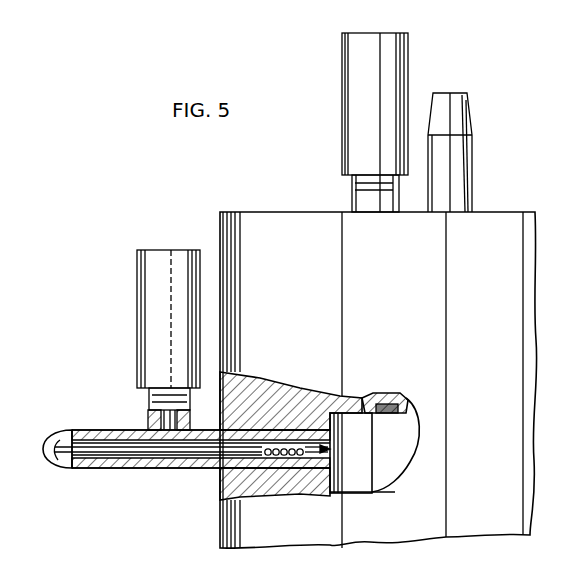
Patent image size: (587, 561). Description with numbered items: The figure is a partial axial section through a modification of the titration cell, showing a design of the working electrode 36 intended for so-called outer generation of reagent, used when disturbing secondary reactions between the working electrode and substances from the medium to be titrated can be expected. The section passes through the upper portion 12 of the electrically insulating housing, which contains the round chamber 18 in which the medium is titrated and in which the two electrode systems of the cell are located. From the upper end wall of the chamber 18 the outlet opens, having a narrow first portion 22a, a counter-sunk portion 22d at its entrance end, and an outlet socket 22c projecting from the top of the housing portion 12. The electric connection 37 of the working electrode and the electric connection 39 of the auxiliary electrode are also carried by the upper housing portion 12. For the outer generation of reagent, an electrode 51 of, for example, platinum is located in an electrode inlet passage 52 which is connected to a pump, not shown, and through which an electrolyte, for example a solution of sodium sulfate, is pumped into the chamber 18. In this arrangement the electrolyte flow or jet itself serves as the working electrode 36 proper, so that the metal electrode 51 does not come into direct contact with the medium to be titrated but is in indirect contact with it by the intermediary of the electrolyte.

The upper portion 12 is at (378, 368).
The electric connection 39 is at (341, 108).
The outlet socket 22c is at (462, 115).
The electric connection 37 is at (136, 316).
The electrode inlet passage 52 is at (108, 451).
The electrode 51 is at (193, 453).
The working electrode 36 is at (336, 446).
The first portion 22a is at (383, 395).
The counter-sunk portion 22d is at (388, 413).
The chamber 18 is at (394, 474).